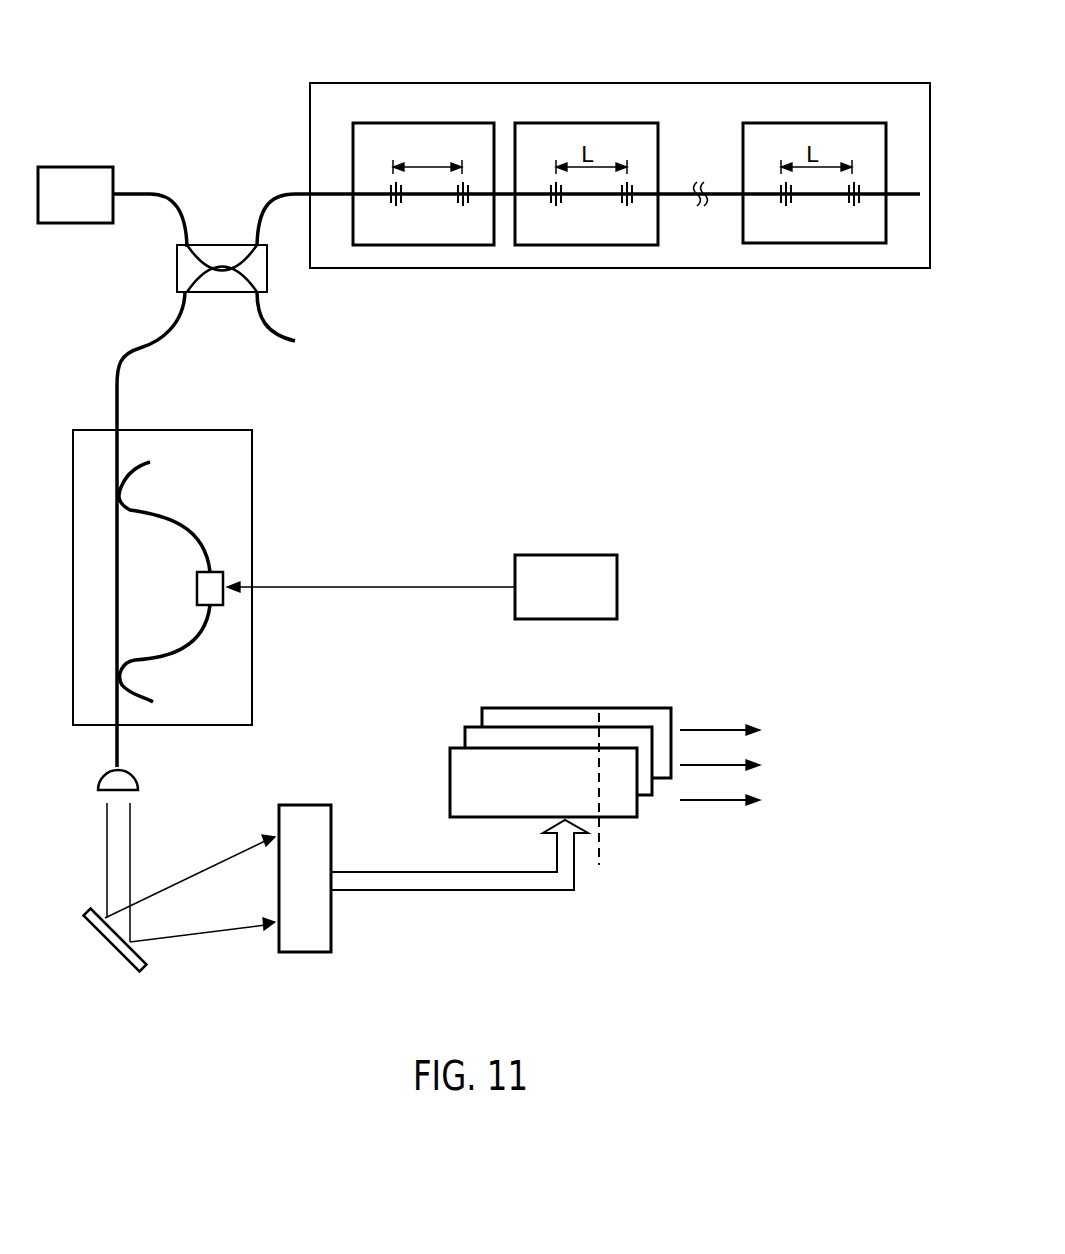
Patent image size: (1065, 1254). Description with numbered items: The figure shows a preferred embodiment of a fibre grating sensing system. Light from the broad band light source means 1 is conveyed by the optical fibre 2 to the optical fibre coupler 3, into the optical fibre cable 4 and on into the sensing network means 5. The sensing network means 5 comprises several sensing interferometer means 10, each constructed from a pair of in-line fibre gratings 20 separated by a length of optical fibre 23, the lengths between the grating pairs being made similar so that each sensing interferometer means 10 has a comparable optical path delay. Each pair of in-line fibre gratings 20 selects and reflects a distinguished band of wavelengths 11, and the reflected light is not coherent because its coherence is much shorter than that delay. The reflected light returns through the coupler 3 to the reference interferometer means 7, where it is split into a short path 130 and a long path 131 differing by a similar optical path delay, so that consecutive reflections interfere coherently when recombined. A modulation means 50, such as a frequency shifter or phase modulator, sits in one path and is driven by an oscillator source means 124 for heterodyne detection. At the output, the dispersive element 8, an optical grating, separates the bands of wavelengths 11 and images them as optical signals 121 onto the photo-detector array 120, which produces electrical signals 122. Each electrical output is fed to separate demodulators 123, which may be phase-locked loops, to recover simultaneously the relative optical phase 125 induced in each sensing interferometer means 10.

The broad band light source means 1 is at (70, 167).
The optical fibre 2 is at (155, 193).
The optical fibre coupler 3 is at (220, 245).
The optical fibre cable 4 is at (293, 191).
The sensing network means 5 is at (342, 83).
The reference interferometer means 7 is at (252, 452).
The dispersive element 8 is at (107, 938).
The sensing interferometer means 10 is at (537, 123).
The band of wavelengths 11 is at (590, 233).
The in-line fibre gratings 20 is at (397, 220).
The length of optical fibre 23 is at (410, 163).
The modulation means 50 is at (213, 608).
The photo-detector array 120 is at (332, 937).
The optical signals 121 is at (207, 935).
The electrical signals 122 is at (468, 890).
The demodulators 123 is at (630, 817).
The oscillator source means 124 is at (545, 555).
The relative optical phase 125 is at (798, 730).
The short path 130 is at (118, 592).
The long path 131 is at (192, 523).